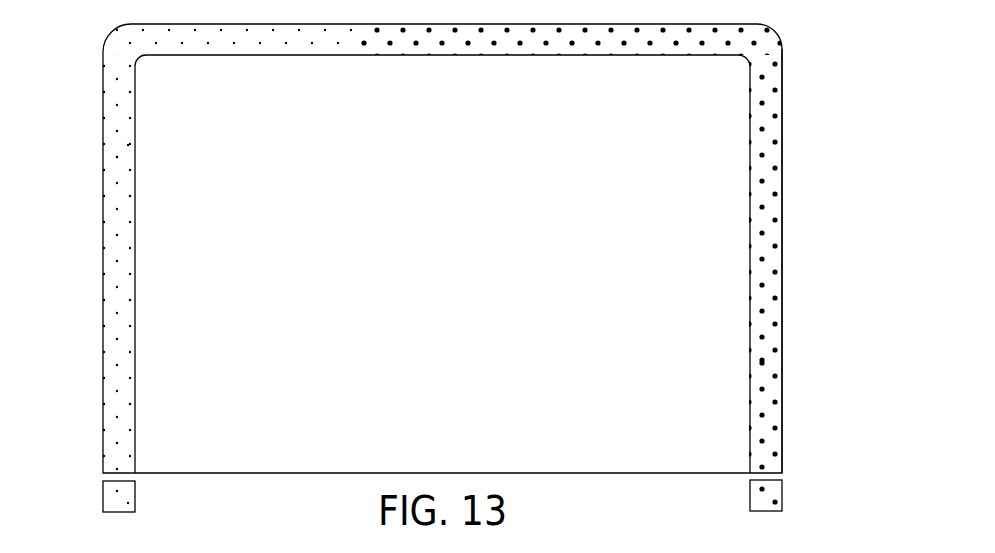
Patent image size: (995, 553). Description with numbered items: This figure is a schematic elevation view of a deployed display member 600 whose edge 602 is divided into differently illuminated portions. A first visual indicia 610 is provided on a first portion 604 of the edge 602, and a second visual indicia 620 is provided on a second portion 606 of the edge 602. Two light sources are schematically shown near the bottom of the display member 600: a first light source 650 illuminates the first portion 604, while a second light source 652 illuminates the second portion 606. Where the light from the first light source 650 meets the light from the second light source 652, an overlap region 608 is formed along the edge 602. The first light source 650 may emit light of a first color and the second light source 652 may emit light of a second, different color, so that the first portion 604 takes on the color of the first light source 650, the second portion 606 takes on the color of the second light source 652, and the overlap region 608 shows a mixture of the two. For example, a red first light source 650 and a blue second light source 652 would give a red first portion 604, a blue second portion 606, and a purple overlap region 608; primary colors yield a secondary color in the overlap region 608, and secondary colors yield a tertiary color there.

The display member 600 is at (803, 101).
The edge 602 is at (783, 193).
The first portion 604 is at (801, 285).
The second portion 606 is at (97, 320).
The overlap region 608 is at (442, 59).
The first visual indicia 610 is at (764, 360).
The second visual indicia 620 is at (117, 156).
The first light source 650 is at (784, 497).
The second light source 652 is at (103, 499).